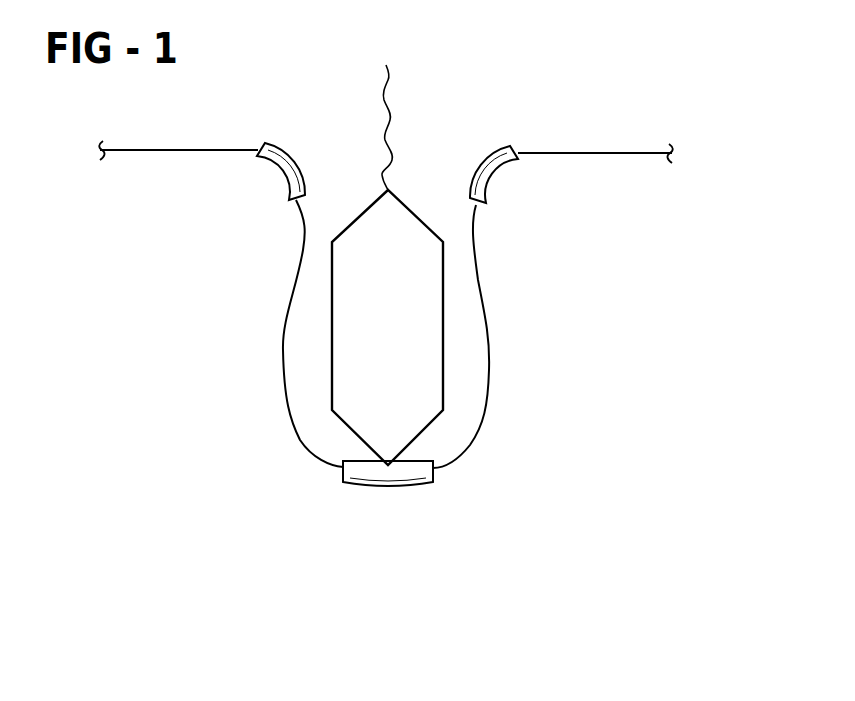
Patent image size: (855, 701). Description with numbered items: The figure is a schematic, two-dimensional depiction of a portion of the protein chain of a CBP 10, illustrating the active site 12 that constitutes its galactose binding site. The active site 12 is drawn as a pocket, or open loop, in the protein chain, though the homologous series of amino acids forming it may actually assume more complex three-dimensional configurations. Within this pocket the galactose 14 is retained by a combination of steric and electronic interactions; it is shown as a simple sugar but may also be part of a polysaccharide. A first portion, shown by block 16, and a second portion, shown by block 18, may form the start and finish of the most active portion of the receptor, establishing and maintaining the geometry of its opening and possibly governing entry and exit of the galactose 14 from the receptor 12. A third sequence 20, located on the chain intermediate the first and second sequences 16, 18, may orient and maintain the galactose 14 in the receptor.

The CBP 10 is at (604, 127).
The active site 12 is at (488, 323).
The galactose 14 is at (445, 386).
The first portion 16 is at (283, 178).
The second portion 18 is at (494, 180).
The third sequence 20 is at (387, 488).